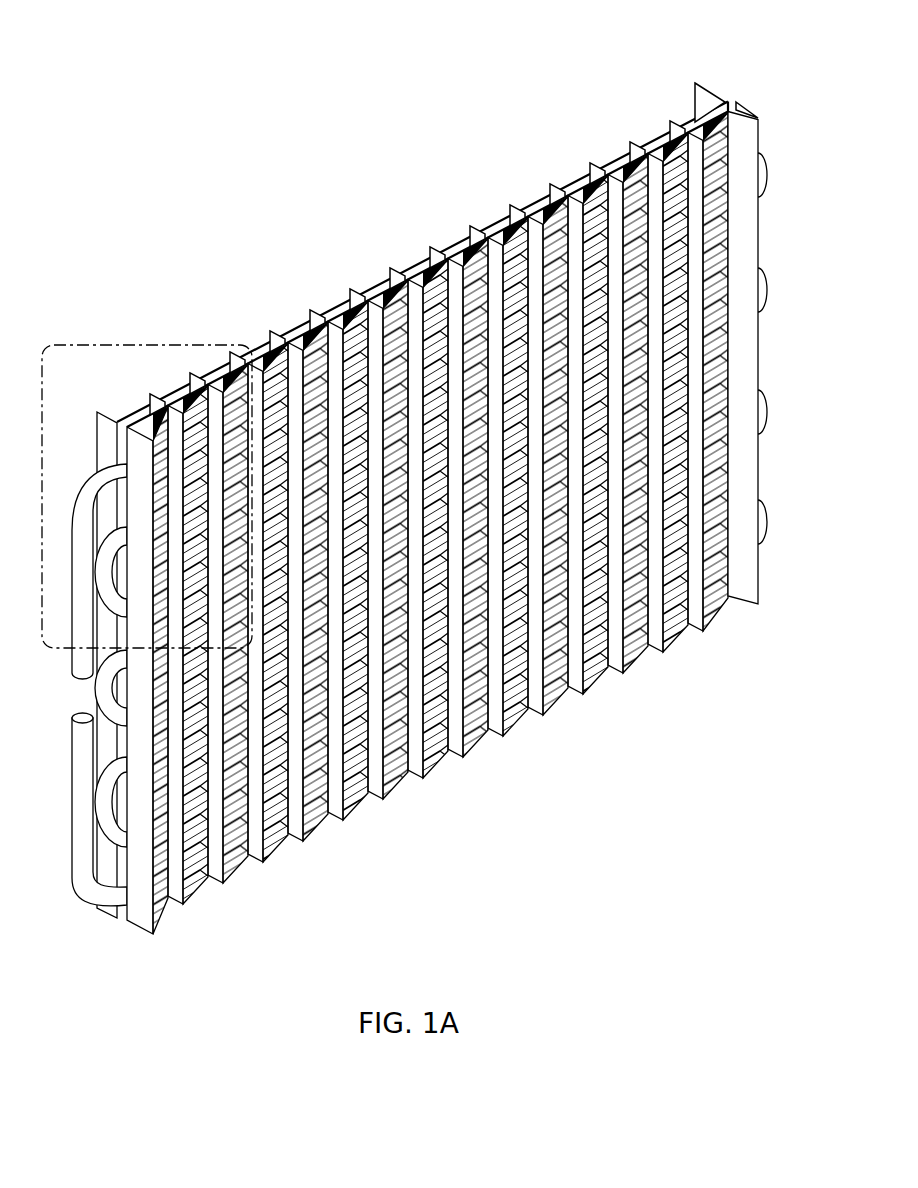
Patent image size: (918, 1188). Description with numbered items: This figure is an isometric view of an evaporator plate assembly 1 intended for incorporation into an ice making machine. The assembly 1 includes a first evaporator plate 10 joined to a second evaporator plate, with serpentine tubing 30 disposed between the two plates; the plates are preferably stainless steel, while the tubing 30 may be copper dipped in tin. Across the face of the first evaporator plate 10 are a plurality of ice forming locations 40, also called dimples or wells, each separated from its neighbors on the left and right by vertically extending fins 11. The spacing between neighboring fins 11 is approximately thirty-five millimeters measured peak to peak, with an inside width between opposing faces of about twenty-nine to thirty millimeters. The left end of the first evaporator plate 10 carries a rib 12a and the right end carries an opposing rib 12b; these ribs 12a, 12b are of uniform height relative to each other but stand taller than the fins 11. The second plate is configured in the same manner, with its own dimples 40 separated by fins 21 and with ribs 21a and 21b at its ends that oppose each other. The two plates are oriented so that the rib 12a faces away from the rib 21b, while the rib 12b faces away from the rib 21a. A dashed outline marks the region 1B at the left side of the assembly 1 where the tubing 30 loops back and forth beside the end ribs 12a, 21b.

The evaporator plate assembly 1 is at (420, 496).
The detail region 1B is at (90, 343).
The first evaporator plate 10 is at (420, 496).
The fins 11 is at (397, 792).
The rib 12a is at (150, 932).
The rib 12b is at (758, 603).
The fins 21 is at (470, 224).
The rib 21a is at (694, 90).
The rib 21b is at (108, 413).
The serpentine tubing 30 is at (70, 684).
The ice forming locations 40 is at (714, 300).